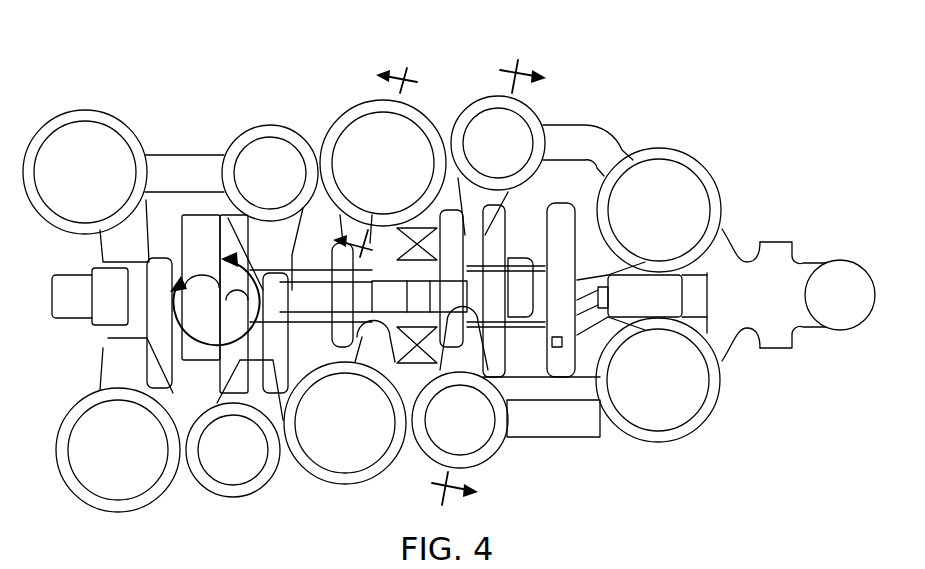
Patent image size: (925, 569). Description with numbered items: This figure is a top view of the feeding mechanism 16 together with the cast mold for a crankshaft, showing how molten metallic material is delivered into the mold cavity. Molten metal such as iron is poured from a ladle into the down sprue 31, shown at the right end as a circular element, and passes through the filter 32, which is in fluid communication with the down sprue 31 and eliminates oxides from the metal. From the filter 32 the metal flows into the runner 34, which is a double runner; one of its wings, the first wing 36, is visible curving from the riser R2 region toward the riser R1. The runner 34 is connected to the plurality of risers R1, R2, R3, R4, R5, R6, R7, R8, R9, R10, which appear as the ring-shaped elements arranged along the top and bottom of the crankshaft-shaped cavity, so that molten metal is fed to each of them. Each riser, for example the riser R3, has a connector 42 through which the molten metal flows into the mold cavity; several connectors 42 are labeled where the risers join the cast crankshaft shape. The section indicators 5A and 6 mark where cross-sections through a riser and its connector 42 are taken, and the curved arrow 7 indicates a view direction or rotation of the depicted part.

The feeding mechanism 16 is at (132, 68).
The connector 42 is at (100, 240).
The first wing 36 is at (582, 138).
The runner 34 is at (733, 233).
The filter 32 is at (777, 247).
The down sprue 31 is at (847, 306).
The rotation direction arrow 7 is at (214, 292).
The section line 5A is at (393, 167).
The section line 6 is at (500, 285).
The riser R1 is at (659, 210).
The riser R2 is at (498, 143).
The riser R3 is at (383, 163).
The riser R4 is at (270, 173).
The riser R5 is at (85, 172).
The riser R6 is at (658, 380).
The riser R7 is at (460, 420).
The riser R8 is at (345, 423).
The riser R9 is at (233, 450).
The riser R10 is at (118, 450).